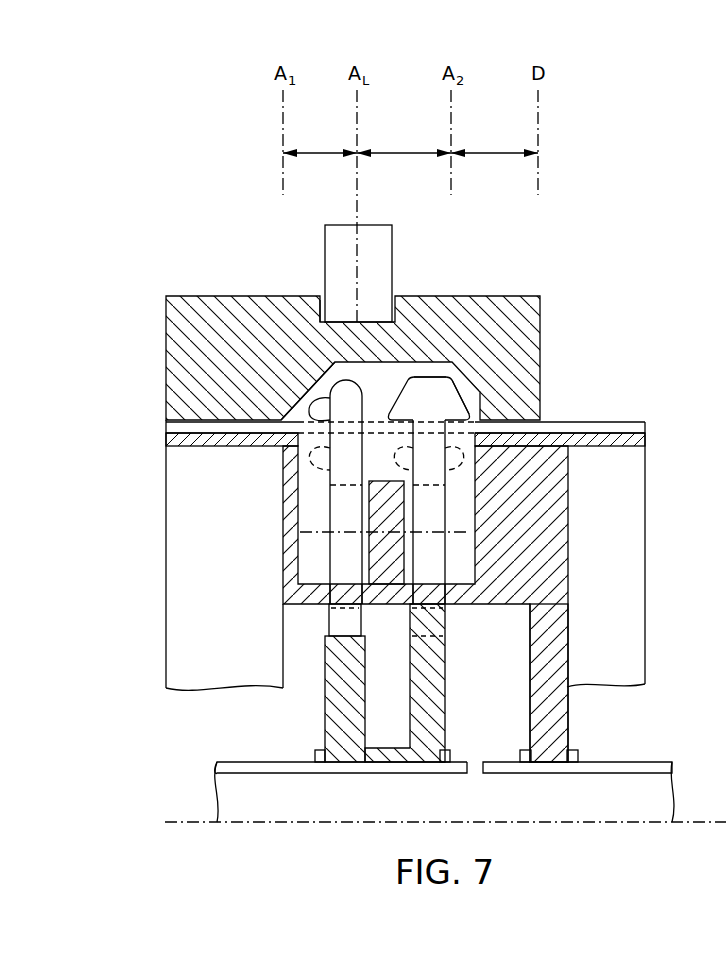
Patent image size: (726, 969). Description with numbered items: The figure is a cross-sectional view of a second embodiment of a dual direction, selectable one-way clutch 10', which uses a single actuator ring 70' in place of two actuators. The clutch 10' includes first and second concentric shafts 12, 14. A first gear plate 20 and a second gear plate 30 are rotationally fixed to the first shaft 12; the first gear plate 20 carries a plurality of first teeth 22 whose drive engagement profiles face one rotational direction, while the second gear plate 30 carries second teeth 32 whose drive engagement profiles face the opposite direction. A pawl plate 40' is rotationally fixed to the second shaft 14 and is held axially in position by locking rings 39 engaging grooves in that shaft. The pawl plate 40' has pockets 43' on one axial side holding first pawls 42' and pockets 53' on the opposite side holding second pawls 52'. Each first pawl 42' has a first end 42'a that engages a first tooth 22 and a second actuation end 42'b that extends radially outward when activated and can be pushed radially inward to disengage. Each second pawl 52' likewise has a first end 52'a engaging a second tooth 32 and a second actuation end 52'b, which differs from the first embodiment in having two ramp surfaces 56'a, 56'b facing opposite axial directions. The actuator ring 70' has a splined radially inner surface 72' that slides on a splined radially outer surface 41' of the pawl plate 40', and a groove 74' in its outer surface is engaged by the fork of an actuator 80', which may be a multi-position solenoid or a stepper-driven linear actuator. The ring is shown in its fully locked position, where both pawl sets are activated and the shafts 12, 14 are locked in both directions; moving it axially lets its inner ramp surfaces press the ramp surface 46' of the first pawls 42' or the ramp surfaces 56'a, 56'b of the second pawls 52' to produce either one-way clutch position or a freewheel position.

The dual direction, selectable one-way clutch 10' is at (642, 115).
The first shaft 12 is at (266, 797).
The second shaft 14 is at (610, 797).
The first gear plate 20 is at (340, 685).
The first teeth 22 is at (325, 640).
The second gear plate 30 is at (440, 688).
The second teeth 32 is at (440, 622).
The locking rings 39 is at (315, 752).
The pawl plate 40' is at (500, 604).
The splined radially outer surface 41' is at (419, 510).
The first pawls 42' is at (220, 492).
The first end of first pawl 42'a is at (214, 582).
The second actuation end of first pawl 42'b is at (290, 326).
The pockets 43' is at (241, 532).
The first ramp surface of first pawl 46' is at (259, 326).
The second pawls 52' is at (555, 512).
The first end of second pawl 52'a is at (569, 552).
The second actuation end of second pawl 52'b is at (521, 340).
The pockets 53' is at (581, 512).
The first ramp surface of second pawl 56'a is at (540, 372).
The second ramp surface of second pawl 56'b is at (433, 328).
The actuator ring 70' is at (309, 355).
The splined radially inner surface 72' is at (361, 429).
The groove 74' is at (305, 260).
The actuator 80' is at (372, 254).